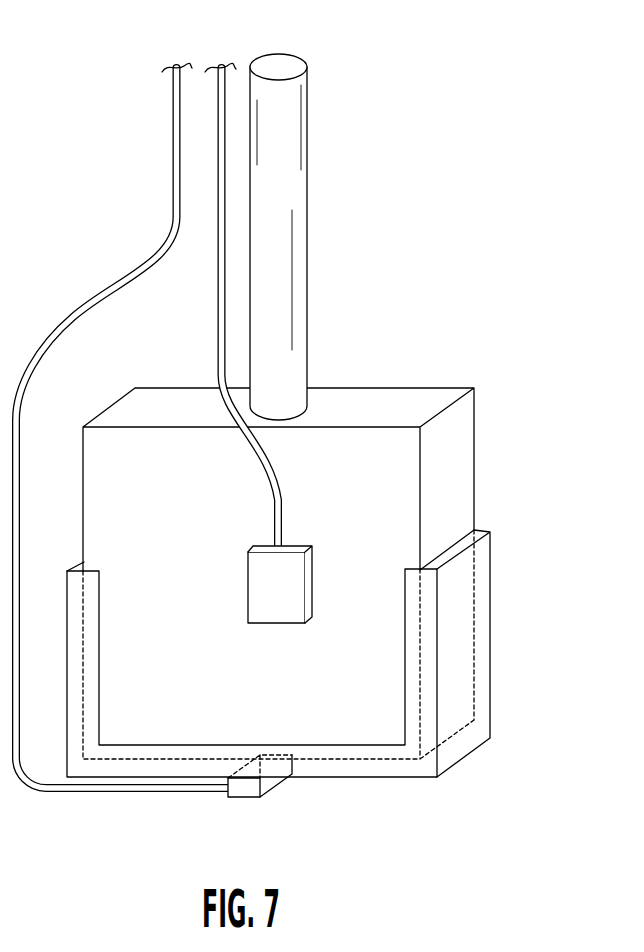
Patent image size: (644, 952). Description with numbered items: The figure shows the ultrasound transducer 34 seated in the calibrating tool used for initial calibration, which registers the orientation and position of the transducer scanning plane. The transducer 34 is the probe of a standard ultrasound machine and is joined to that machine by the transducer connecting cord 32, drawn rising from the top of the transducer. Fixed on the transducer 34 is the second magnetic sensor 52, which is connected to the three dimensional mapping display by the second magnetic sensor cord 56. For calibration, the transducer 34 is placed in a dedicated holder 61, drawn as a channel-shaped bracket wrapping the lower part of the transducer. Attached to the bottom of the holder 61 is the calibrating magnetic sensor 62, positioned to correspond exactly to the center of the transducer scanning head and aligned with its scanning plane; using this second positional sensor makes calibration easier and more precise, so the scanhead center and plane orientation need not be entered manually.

The transducer connecting cord 32 is at (307, 146).
The transducer 34 is at (454, 473).
The second magnetic sensor 52 is at (309, 597).
The second magnetic sensor cord 56 is at (222, 66).
The dedicated holder 61 is at (482, 659).
The calibrating magnetic sensor 62 is at (240, 797).